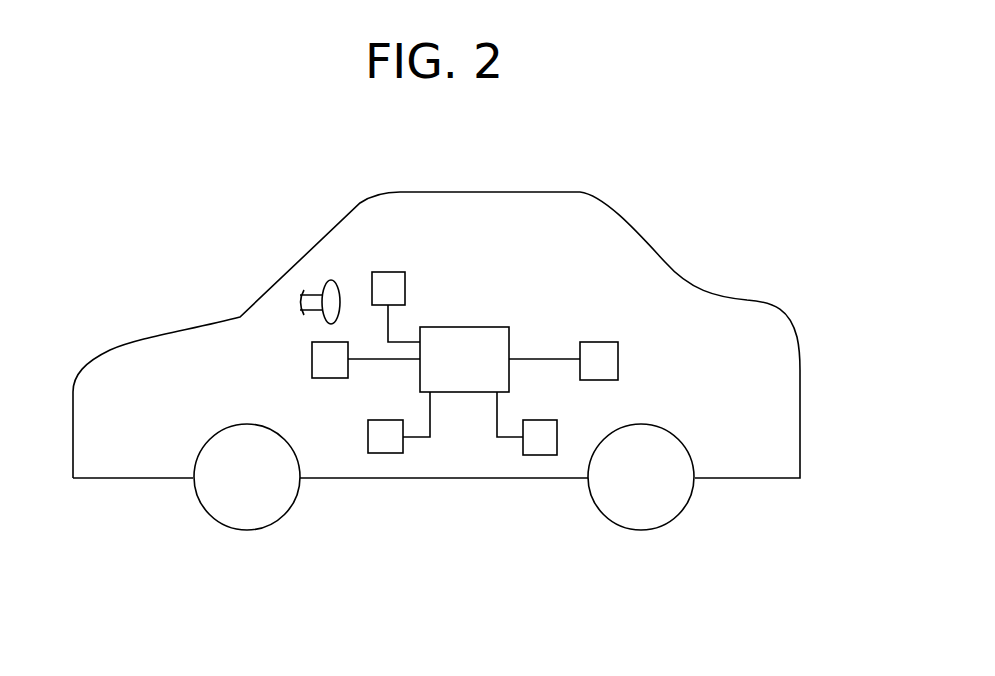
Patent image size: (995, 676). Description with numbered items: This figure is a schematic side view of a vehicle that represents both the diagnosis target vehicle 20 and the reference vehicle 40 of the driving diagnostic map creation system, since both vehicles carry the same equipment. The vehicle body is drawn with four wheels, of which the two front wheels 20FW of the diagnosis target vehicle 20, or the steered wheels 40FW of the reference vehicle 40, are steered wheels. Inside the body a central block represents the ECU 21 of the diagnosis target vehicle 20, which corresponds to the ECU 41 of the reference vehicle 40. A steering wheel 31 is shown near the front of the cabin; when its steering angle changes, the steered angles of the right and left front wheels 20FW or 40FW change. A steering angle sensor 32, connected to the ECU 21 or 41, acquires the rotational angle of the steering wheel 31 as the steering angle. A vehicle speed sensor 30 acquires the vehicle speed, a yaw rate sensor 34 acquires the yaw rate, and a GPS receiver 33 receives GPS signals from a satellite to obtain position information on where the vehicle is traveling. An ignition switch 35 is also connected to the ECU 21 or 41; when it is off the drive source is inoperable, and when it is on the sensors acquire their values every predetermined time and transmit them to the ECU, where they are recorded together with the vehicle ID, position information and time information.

The diagnosis target vehicle 20 is at (450, 330).
The reference vehicle 40 is at (698, 239).
The front wheels 20FW is at (439, 530).
The steered wheels (front wheels) 40FW is at (233, 522).
The electronic control unit (ECU) 21 is at (482, 325).
The ECU 41 is at (480, 327).
The vehicle speed sensor 30 is at (618, 360).
The steering wheel 31 is at (333, 281).
The steering angle sensor 32 is at (388, 272).
The GPS receiver 33 is at (388, 420).
The yaw rate sensor 34 is at (557, 433).
The ignition switch 35 is at (327, 379).